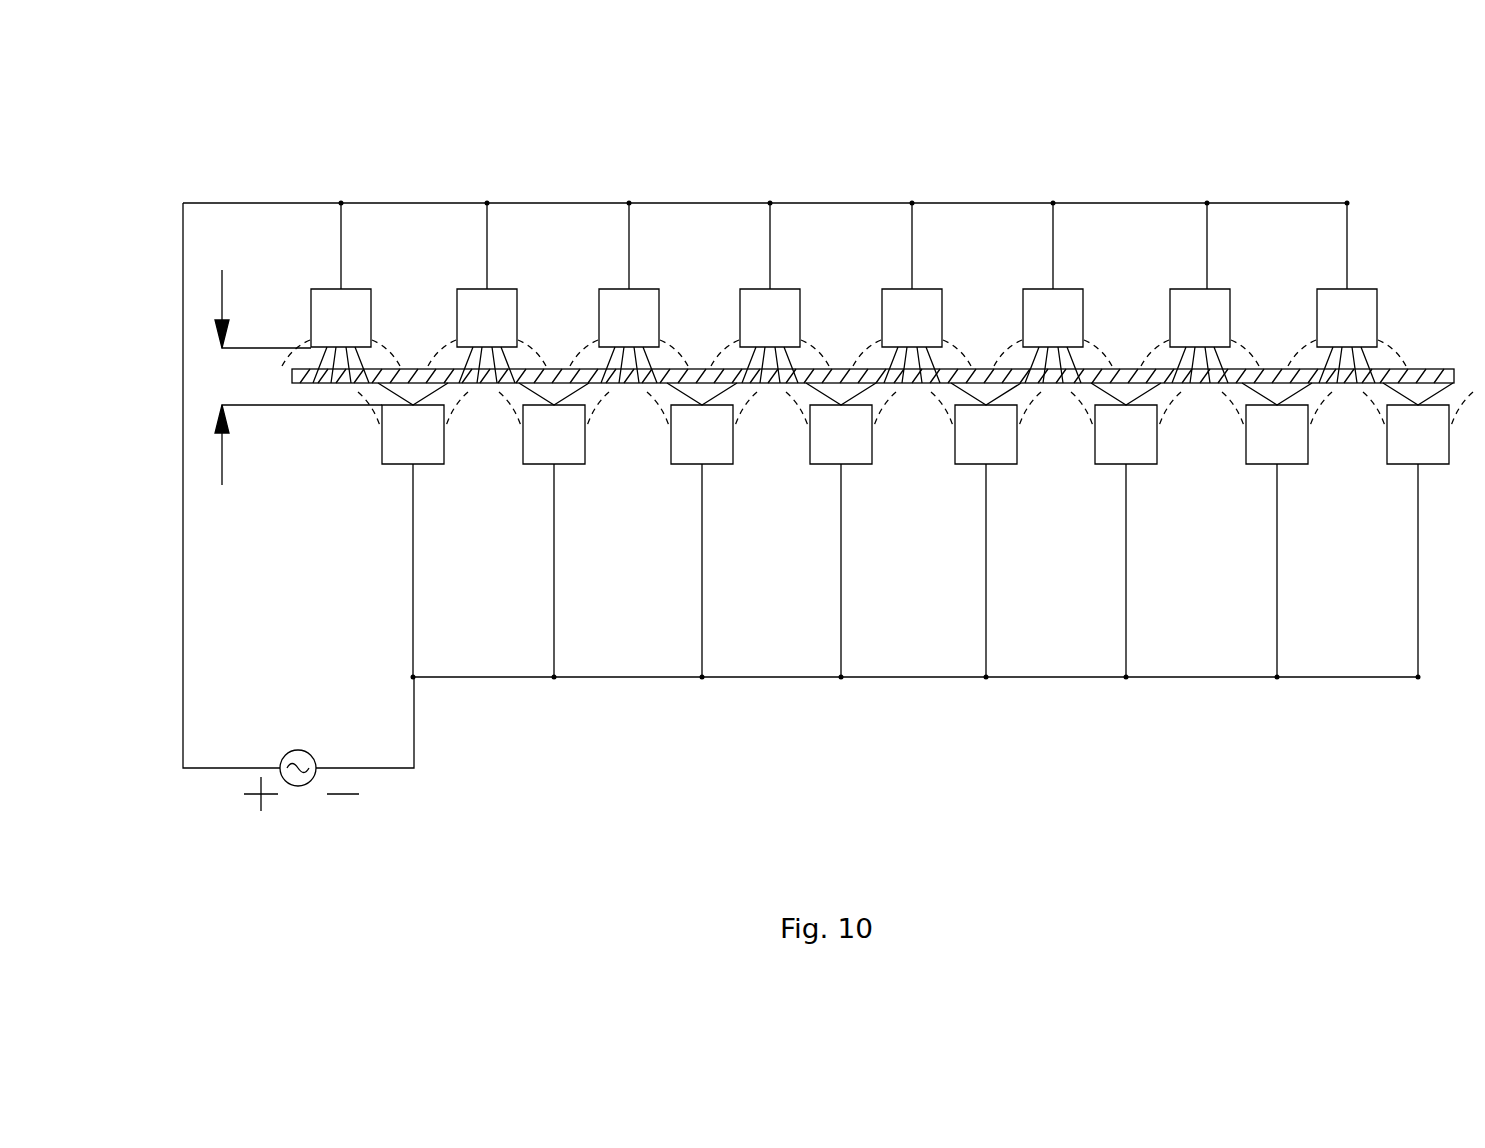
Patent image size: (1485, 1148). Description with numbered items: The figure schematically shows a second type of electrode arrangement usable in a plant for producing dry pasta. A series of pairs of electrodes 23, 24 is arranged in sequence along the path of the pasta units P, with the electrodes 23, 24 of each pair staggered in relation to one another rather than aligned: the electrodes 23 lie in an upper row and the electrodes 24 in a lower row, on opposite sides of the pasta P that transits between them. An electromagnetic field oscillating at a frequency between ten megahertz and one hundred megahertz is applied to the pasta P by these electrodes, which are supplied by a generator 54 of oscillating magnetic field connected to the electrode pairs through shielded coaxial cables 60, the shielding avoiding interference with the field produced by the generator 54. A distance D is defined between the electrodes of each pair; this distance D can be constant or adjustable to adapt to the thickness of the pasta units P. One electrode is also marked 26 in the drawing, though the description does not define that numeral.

The electrode 23 is at (345, 315).
The electrode 24 is at (430, 440).
The electrode 26 is at (1205, 320).
The coaxial cables 60 is at (483, 258).
The generator 54 is at (283, 779).
The pasta units P is at (1433, 370).
The distance D is at (297, 377).